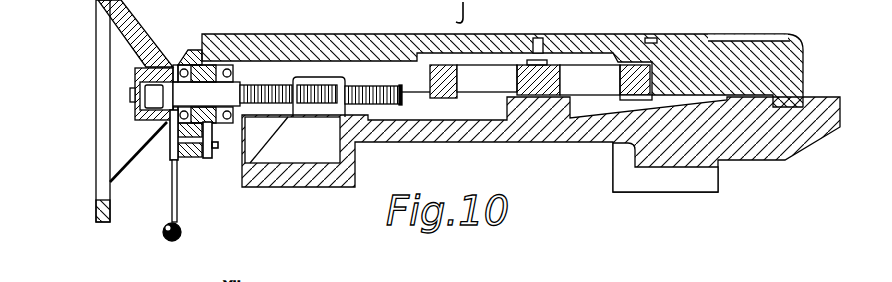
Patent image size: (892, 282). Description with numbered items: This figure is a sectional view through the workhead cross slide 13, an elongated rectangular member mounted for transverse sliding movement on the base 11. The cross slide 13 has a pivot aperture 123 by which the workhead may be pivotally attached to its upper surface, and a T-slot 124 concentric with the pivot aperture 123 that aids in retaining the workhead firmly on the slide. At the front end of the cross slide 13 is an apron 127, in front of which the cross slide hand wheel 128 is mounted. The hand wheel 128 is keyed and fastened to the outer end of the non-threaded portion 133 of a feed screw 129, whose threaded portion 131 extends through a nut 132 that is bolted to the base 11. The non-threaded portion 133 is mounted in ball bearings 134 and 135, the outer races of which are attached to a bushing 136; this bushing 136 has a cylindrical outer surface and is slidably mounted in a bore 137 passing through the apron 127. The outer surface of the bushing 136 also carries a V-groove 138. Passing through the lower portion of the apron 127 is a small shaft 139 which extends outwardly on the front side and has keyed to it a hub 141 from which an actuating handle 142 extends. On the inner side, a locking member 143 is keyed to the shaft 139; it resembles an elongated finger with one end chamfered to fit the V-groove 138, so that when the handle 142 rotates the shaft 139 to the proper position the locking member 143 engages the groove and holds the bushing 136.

The base 11 is at (607, 130).
The workhead cross slide 13 is at (310, 48).
The pivot aperture 123 is at (540, 38).
The T-slot 124 is at (652, 38).
The apron 127 is at (188, 146).
The cross slide hand wheel 128 is at (125, 31).
The feed screw 129 is at (268, 85).
The threaded portion 131 is at (387, 84).
The nut 132 is at (333, 80).
The non-threaded portion 133 is at (210, 88).
The ball bearing 134 is at (178, 65).
The ball bearing 135 is at (233, 77).
The bushing 136 is at (192, 62).
The bore 137 is at (183, 50).
The V-groove 138 is at (214, 130).
The small shaft 139 is at (183, 158).
The hub 141 is at (173, 145).
The actuating handle 142 is at (170, 212).
The locking member 143 is at (207, 158).